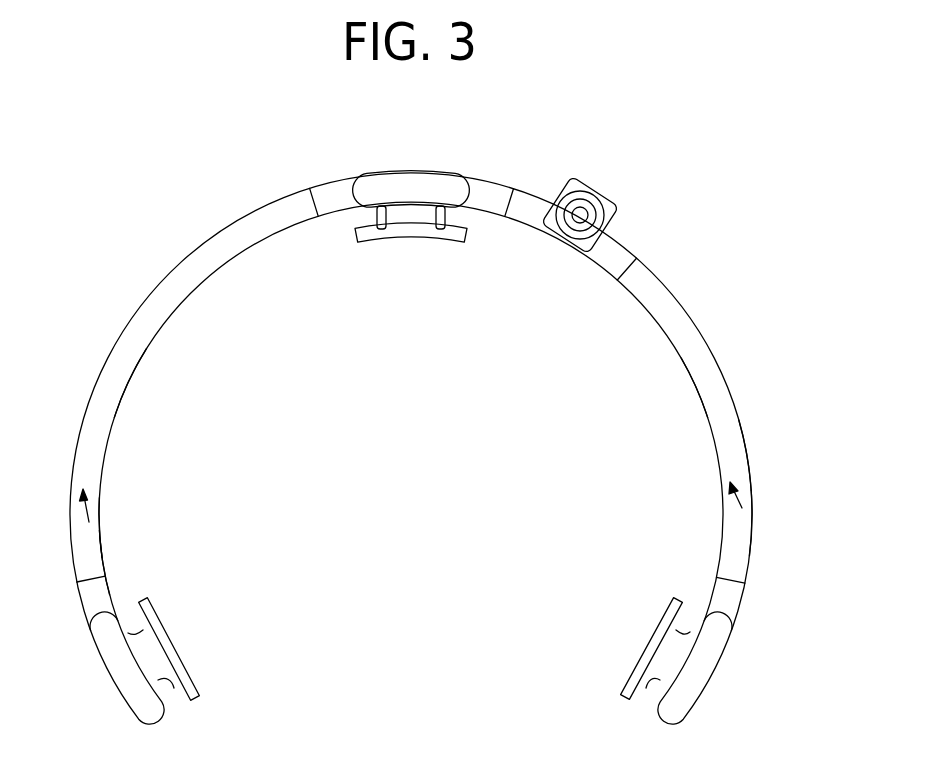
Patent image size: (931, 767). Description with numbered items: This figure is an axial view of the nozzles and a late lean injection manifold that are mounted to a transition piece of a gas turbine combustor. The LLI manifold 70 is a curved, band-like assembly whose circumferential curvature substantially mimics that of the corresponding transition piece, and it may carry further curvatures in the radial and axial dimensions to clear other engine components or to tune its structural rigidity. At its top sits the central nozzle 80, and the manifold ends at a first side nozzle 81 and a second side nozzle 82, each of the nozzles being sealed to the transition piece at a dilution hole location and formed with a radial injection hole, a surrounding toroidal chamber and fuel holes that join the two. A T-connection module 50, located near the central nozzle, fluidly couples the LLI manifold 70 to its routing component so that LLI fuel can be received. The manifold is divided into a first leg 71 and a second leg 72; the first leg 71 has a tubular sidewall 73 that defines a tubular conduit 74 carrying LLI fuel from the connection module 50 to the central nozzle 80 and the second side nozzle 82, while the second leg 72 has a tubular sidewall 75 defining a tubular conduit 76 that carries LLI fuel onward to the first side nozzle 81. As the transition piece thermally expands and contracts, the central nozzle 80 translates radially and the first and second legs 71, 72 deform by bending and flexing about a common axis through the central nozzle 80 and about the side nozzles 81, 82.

The T-connection module 50 is at (595, 190).
The LLI manifold 70 is at (668, 272).
The first leg 71 is at (693, 388).
The second leg 72 is at (130, 383).
The tubular sidewall 73 is at (746, 455).
The tubular conduit 74 is at (750, 521).
The tubular sidewall 75 is at (106, 465).
The tubular conduit 76 is at (100, 528).
The central nozzle 80 is at (412, 172).
The first side nozzle 81 is at (174, 655).
The second side nozzle 82 is at (715, 668).